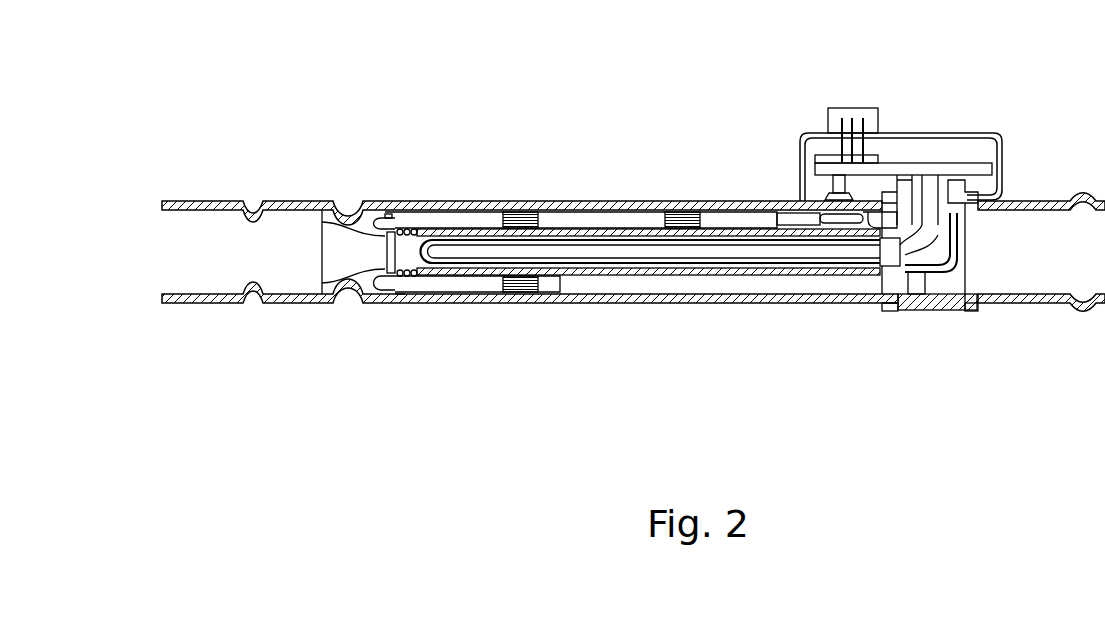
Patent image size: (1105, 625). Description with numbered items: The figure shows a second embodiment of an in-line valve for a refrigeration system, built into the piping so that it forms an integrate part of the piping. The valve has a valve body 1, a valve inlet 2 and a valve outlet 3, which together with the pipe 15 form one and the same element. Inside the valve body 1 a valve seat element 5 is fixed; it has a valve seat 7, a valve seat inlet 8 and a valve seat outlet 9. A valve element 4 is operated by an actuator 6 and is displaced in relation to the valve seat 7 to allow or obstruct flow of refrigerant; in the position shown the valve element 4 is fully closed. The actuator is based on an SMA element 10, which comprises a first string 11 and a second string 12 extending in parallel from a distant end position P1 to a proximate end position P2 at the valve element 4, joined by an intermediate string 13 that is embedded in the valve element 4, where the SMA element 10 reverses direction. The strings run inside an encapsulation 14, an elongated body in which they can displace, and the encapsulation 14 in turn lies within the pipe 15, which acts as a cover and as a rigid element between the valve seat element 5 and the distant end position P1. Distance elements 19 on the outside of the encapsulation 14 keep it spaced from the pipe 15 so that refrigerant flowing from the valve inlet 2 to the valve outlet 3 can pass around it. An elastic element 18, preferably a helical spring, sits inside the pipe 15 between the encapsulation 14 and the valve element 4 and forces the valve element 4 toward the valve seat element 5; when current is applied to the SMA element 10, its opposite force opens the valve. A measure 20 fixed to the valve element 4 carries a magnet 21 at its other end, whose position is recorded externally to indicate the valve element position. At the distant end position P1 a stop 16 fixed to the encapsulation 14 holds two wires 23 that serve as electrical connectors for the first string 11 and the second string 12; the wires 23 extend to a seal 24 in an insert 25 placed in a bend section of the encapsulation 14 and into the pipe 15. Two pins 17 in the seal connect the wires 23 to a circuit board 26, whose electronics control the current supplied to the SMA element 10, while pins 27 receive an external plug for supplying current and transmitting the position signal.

The valve body 1 is at (347, 180).
The valve inlet 2 is at (1052, 226).
The valve outlet 3 is at (225, 218).
The valve element 4 is at (477, 207).
The valve seat element 5 is at (380, 212).
The actuator 6 is at (584, 216).
The valve seat 7 is at (391, 215).
The valve seat inlet 8 is at (362, 258).
The valve seat outlet 9 is at (335, 268).
The SMA element 10 is at (608, 232).
The first string 11 is at (553, 232).
The second string 12 is at (550, 262).
The intermediate string 13 is at (448, 222).
The encapsulation 14 is at (722, 228).
The pipe 15 is at (712, 214).
The stop 16 is at (918, 272).
The pins 17 is at (905, 180).
The elastic element 18 is at (408, 276).
The distance elements 19 is at (520, 212).
The measure 20 is at (627, 216).
The magnet 21 is at (797, 205).
The wires 23 is at (925, 245).
The seal 24 is at (957, 180).
The insert 25 is at (985, 180).
The circuit board 26 is at (882, 163).
The pins 27 is at (842, 108).
The distant end position P1 is at (874, 306).
The proximate end position P2 is at (398, 303).